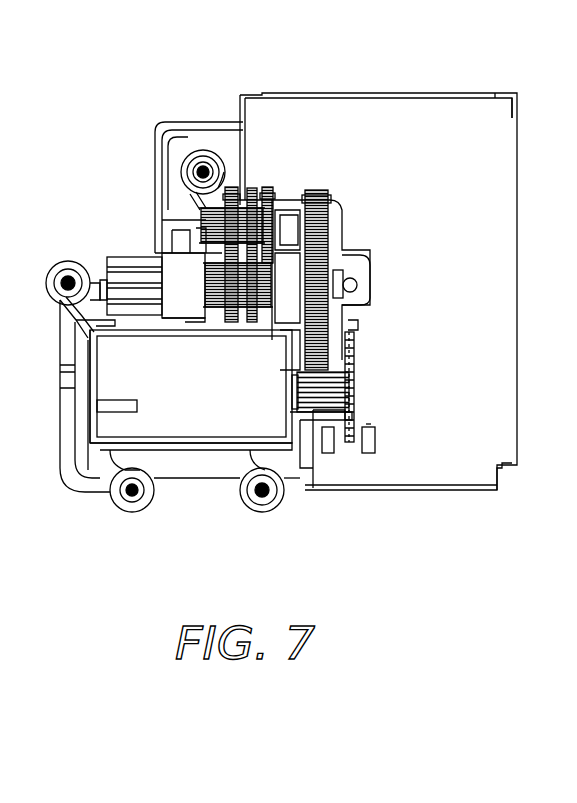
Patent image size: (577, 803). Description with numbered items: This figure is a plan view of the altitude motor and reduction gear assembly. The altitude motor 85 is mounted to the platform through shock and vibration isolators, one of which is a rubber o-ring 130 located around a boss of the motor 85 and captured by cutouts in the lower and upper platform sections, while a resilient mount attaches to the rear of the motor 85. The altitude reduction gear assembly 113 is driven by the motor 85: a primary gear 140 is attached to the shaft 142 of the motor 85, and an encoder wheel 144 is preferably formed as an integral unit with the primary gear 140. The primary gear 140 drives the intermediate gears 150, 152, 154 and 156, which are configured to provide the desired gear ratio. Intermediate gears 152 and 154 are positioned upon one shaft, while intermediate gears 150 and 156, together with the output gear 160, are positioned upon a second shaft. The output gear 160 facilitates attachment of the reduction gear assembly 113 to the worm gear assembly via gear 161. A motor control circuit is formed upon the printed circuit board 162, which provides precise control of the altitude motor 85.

The altitude reduction gear assembly 113 is at (368, 213).
The intermediate gear 154 is at (232, 200).
The intermediate gear 152 is at (268, 196).
The intermediate gear 150 is at (318, 210).
The printed circuit board 162 is at (459, 324).
The encoder wheel 144 is at (355, 328).
The shaft 142 is at (355, 405).
The gear 161 is at (181, 300).
The output gear 160 is at (226, 314).
The intermediate gear 156 is at (261, 318).
The rubber o-ring 130 is at (292, 386).
The primary gear 140 is at (300, 410).
The altitude motor 85 is at (186, 432).